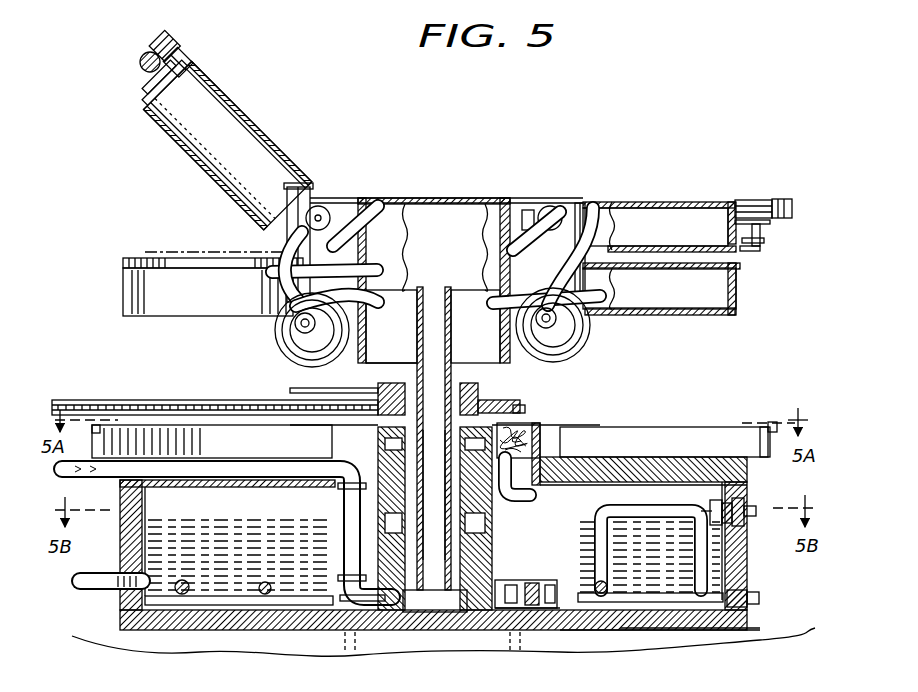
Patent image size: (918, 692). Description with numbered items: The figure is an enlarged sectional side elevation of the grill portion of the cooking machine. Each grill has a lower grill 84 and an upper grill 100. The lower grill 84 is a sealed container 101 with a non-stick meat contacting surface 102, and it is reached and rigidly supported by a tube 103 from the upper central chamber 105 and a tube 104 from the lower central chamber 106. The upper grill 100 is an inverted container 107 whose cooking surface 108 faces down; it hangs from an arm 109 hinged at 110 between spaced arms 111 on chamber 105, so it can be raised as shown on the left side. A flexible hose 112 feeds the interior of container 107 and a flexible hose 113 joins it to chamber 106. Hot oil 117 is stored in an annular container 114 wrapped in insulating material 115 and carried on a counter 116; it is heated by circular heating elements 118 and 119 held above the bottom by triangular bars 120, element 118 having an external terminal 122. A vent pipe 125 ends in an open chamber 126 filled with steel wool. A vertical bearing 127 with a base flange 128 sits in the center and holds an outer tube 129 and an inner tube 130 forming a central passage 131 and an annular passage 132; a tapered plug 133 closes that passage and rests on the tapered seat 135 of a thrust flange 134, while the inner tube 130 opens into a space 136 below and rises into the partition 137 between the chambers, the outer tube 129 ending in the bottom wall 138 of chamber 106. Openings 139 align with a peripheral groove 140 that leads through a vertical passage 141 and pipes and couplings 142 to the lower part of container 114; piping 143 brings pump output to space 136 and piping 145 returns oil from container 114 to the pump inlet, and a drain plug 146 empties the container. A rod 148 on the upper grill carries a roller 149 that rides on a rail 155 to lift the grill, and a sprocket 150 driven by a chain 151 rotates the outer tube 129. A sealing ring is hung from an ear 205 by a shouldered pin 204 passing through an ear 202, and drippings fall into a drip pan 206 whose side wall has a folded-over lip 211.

The lower grill 84 is at (766, 342).
The upper grill 100 is at (246, 108).
The sealed container 101 is at (737, 298).
The meat contacting surface 102 is at (228, 252).
The tube 103 is at (347, 252).
The tube 104 is at (292, 322).
The chamber 105 is at (431, 207).
The chamber 106 is at (525, 326).
The container 107 is at (600, 214).
The cooking surface 108 is at (661, 254).
The arm 109 is at (310, 212).
The hinge 110 is at (320, 206).
The spaced arms 111 is at (342, 208).
The flexible hose 112 is at (528, 210).
The flexible hose 113 is at (280, 348).
The annular container 114 is at (242, 612).
The insulating material 115 is at (128, 500).
The counter 116 is at (762, 632).
The oil 117 is at (208, 503).
The heating element 118 is at (184, 580).
The heating element 119 is at (272, 570).
The spoke-like bar 120 is at (212, 606).
The external terminal 122 is at (752, 512).
The vent pipe 125 is at (492, 525).
The open chamber 126 is at (542, 452).
The vertical bearing 127 is at (392, 627).
The base flange 128 is at (372, 618).
The outer tube 129 is at (400, 373).
The inner tube 130 is at (380, 392).
The central passage 131 is at (428, 307).
The annular passage 132 is at (455, 380).
The tapered plug 133 is at (431, 495).
The thrust flange 134 is at (460, 582).
The tapered seat 135 is at (433, 498).
The space 136 is at (426, 610).
The partition 137 is at (413, 282).
The bottom wall 138 is at (383, 358).
The openings 139 is at (465, 528).
The internal peripheral groove 140 is at (482, 546).
The vertical passage 141 is at (480, 590).
The pipes and couplings 142 is at (525, 608).
The piping 143 is at (338, 512).
The piping 145 is at (93, 591).
The drain plug 146 is at (750, 594).
The rod 148 is at (188, 66).
The roller 149 is at (178, 40).
The sprocket 150 is at (510, 405).
The chain 151 is at (130, 399).
The rail 155 is at (140, 65).
The ear 202 is at (764, 242).
The shouldered pin 204 is at (757, 252).
The ear 205 is at (771, 224).
The drip pan 206 is at (655, 434).
The folded-over lip 211 is at (776, 426).